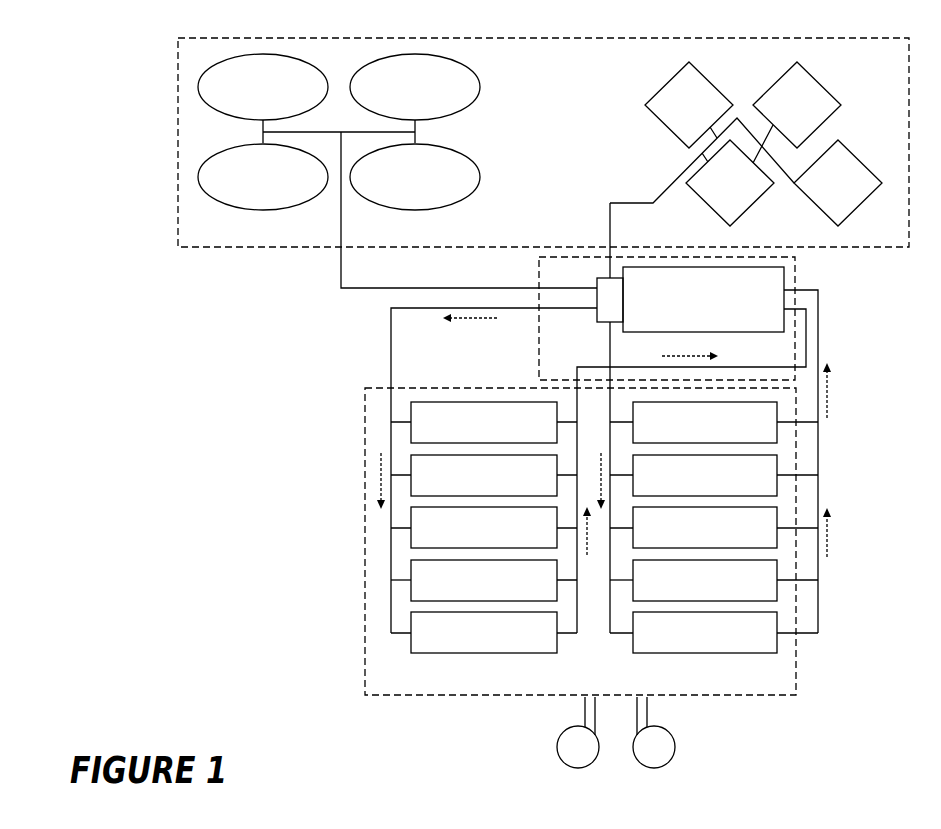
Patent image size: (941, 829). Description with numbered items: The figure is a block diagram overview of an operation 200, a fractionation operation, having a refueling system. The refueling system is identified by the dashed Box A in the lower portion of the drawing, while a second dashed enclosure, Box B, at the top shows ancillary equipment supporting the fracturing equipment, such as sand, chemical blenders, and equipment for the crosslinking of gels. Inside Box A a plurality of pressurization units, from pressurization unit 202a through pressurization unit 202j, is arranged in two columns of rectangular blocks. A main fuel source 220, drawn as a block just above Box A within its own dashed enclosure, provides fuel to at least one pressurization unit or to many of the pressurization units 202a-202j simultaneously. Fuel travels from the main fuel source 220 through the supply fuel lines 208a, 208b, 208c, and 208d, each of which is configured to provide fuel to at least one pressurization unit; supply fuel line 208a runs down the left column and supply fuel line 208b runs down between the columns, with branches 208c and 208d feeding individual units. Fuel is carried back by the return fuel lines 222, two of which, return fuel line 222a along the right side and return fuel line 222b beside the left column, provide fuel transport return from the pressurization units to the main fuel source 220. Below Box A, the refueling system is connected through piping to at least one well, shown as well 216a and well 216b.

The operation 200 is at (166, 632).
The pressurization unit 202a is at (506, 434).
The pressurization unit 202j is at (728, 645).
The supply fuel line 208a is at (390, 346).
The supply fuel line 208b is at (609, 346).
The supply fuel line 208c is at (407, 578).
The supply fuel line 208d is at (618, 582).
The well 216a is at (674, 742).
The well 216b is at (558, 745).
The main fuel source 220 is at (721, 314).
The return fuel lines 222 is at (819, 338).
The return fuel line 222a is at (806, 636).
The return fuel line 222b is at (565, 582).